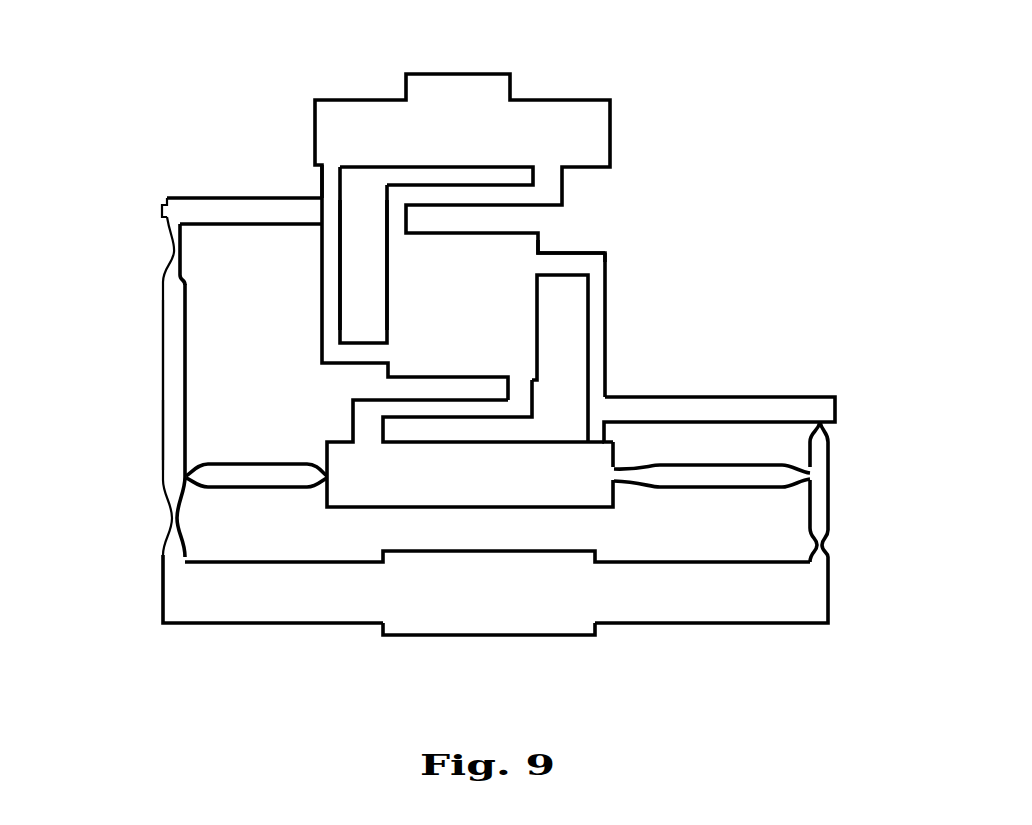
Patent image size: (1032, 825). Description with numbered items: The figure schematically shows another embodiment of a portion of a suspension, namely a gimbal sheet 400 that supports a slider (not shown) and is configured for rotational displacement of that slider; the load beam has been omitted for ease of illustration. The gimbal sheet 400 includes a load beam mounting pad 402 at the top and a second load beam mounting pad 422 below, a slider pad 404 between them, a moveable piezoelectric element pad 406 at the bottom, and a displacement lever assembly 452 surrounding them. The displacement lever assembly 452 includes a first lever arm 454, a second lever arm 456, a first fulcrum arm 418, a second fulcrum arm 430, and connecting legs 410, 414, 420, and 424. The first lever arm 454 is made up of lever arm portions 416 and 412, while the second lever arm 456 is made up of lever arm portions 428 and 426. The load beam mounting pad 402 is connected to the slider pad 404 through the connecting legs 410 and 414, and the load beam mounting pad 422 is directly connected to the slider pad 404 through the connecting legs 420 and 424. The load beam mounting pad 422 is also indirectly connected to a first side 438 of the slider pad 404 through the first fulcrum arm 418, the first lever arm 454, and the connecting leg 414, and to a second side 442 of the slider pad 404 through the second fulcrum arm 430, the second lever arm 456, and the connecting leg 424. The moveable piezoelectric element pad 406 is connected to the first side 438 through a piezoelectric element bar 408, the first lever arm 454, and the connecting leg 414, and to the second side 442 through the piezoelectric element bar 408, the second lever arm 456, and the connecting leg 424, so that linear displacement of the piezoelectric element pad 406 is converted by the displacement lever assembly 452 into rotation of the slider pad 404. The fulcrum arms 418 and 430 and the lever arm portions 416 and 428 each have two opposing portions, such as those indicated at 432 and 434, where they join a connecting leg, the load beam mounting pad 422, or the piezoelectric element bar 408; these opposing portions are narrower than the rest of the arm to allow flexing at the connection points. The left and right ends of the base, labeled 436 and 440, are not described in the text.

The gimbal sheet 400 is at (672, 41).
The load beam mounting pad 402 is at (612, 133).
The slider pad 404 is at (524, 271).
The moveable piezoelectric element pad 406 is at (545, 637).
The piezoelectric element bar 408 is at (667, 625).
The connecting leg 410 is at (566, 185).
The lever arm portion 412 is at (250, 198).
The connecting leg 414 is at (322, 277).
The lever arm portion 416 is at (163, 347).
The first fulcrum arm 418 is at (246, 462).
The connecting leg 420 is at (486, 410).
The load beam mounting pad 422 is at (587, 507).
The connecting leg 424 is at (606, 338).
The lever arm portion 426 is at (790, 397).
The lever arm portion 428 is at (832, 498).
The second fulcrum arm 430 is at (704, 488).
The opposing portion 432 is at (168, 516).
The opposing portion 434 is at (167, 242).
The left base wall 436 is at (163, 595).
The first side of slider pad 438 is at (387, 258).
The right base wall 440 is at (830, 595).
The second side of slider pad 442 is at (540, 306).
The displacement lever assembly 452 is at (64, 400).
The first lever arm 454 is at (152, 431).
The second lever arm 456 is at (845, 520).